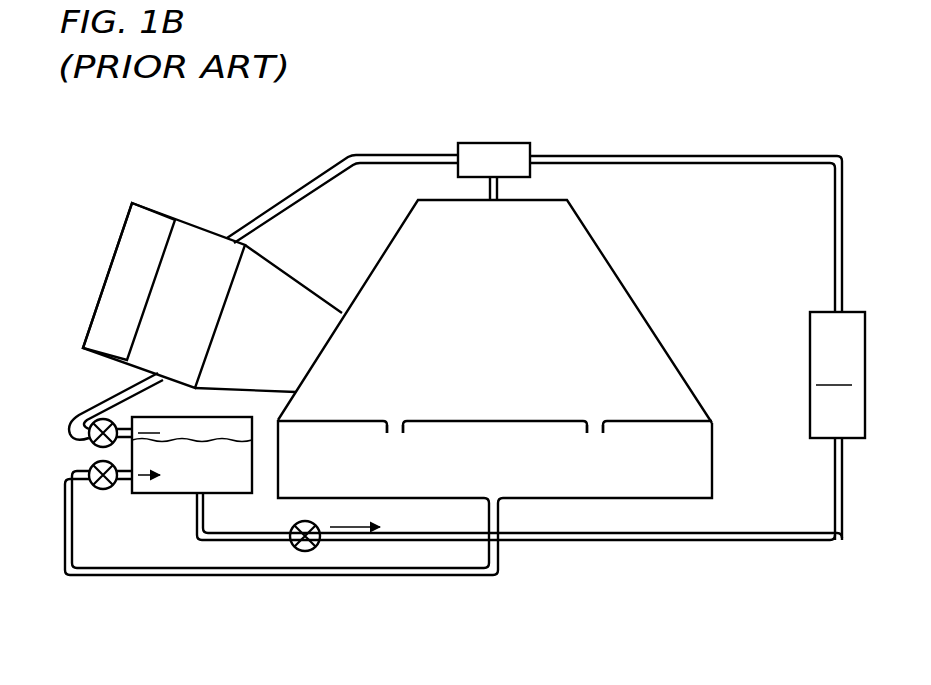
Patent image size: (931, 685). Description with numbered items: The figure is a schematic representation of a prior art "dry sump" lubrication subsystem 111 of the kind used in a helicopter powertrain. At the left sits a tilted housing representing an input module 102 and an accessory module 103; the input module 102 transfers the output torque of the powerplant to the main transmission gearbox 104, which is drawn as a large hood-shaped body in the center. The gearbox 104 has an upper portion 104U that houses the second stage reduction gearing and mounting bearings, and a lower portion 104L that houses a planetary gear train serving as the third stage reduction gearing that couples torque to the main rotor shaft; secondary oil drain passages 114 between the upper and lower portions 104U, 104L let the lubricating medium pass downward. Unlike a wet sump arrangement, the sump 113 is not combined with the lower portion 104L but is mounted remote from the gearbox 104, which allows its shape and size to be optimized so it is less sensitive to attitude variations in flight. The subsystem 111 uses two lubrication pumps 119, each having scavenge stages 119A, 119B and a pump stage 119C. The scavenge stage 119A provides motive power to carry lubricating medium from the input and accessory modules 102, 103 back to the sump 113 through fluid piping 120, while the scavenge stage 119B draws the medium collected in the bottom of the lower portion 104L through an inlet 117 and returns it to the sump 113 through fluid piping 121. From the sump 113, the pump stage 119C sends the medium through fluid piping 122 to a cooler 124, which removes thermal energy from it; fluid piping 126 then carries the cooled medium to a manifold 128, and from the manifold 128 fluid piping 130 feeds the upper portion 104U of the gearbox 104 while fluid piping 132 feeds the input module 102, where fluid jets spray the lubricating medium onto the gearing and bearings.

The dry sump lubrication subsystem 111 is at (283, 628).
The input module 102 is at (200, 227).
The accessory module 103 is at (148, 204).
The main transmission gearbox 104 is at (534, 351).
The upper portion 104U is at (654, 334).
The lower portion 104L is at (712, 447).
The sump 113 is at (158, 498).
The secondary oil drain passages 114 is at (394, 424).
The inlet 117 is at (497, 489).
The lubrication pump 119 is at (200, 544).
The scavenge stage 119A is at (90, 443).
The scavenge stage 119B is at (103, 489).
The pump stage 119C is at (293, 548).
The fluid piping 120 is at (113, 395).
The fluid piping 121 is at (405, 578).
The fluid piping 122 is at (708, 545).
The cooler 124 is at (837, 375).
The fluid piping 126 is at (703, 157).
The manifold 128 is at (494, 160).
The fluid piping 130 is at (498, 192).
The fluid piping 132 is at (393, 153).